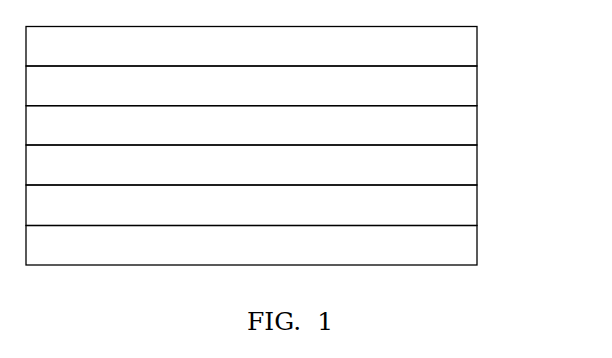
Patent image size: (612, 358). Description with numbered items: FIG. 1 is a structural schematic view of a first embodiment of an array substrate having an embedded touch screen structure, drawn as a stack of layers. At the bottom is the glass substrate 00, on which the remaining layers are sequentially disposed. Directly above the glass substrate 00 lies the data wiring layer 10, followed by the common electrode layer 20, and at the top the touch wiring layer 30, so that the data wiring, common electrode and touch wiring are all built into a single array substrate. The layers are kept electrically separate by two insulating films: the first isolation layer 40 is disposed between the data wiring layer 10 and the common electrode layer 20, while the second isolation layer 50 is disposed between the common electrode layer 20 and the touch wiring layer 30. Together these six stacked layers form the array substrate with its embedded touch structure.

The touch wiring layer 30 is at (467, 47).
The second isolation layer 50 is at (467, 88).
The common electrode layer 20 is at (467, 124).
The first isolation layer 40 is at (467, 164).
The data wiring layer 10 is at (467, 207).
The glass substrate 00 is at (467, 245).